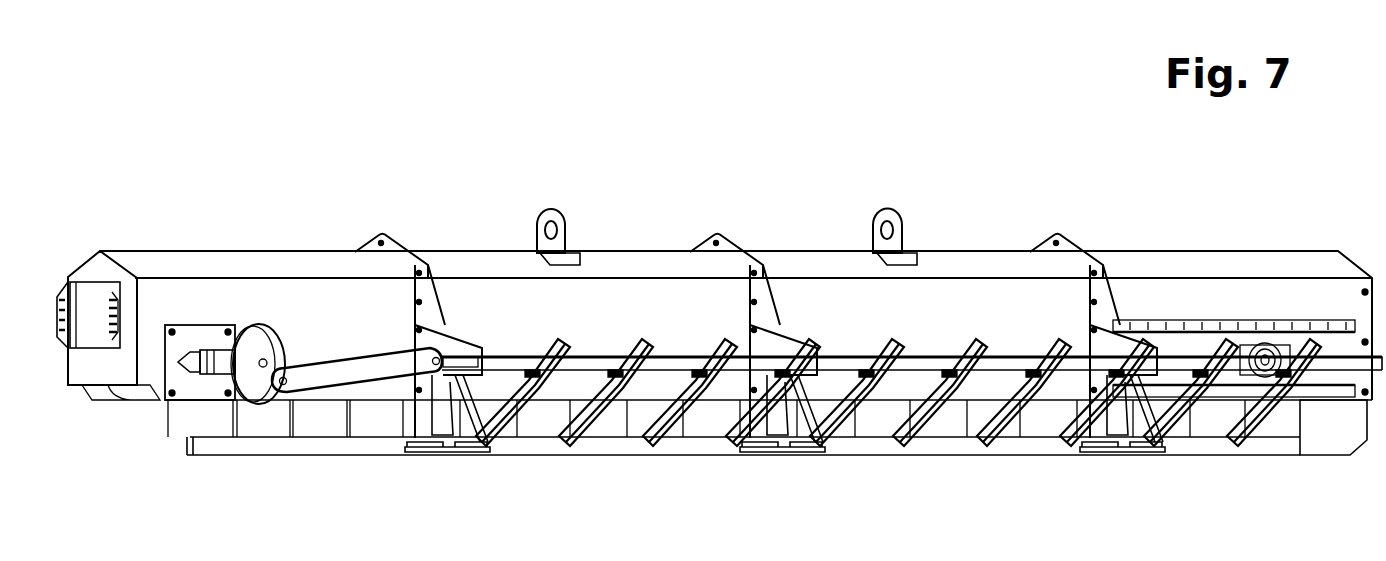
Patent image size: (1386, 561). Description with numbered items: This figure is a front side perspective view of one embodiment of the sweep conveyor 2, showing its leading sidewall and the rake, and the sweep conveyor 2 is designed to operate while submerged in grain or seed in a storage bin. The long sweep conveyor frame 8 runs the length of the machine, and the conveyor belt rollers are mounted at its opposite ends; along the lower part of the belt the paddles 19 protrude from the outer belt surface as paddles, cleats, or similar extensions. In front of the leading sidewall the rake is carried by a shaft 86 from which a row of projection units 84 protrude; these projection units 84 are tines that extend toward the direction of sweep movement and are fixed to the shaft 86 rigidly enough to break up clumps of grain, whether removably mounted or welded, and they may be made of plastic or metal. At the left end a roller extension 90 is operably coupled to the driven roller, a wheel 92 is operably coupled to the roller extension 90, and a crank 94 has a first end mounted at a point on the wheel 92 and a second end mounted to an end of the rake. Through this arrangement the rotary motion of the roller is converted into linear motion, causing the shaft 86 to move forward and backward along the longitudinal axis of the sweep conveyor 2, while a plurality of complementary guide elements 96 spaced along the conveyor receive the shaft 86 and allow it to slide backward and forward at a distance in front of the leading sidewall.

The sweep conveyor 2 is at (340, 168).
The sweep conveyor frame 8 is at (716, 235).
The paddles 19 is at (346, 418).
The projection units 84 is at (636, 340).
The shaft 86 is at (851, 358).
The roller extension 90 is at (228, 328).
The wheel 92 is at (272, 326).
The crank 94 is at (356, 357).
The complementary guide elements 96 is at (462, 340).